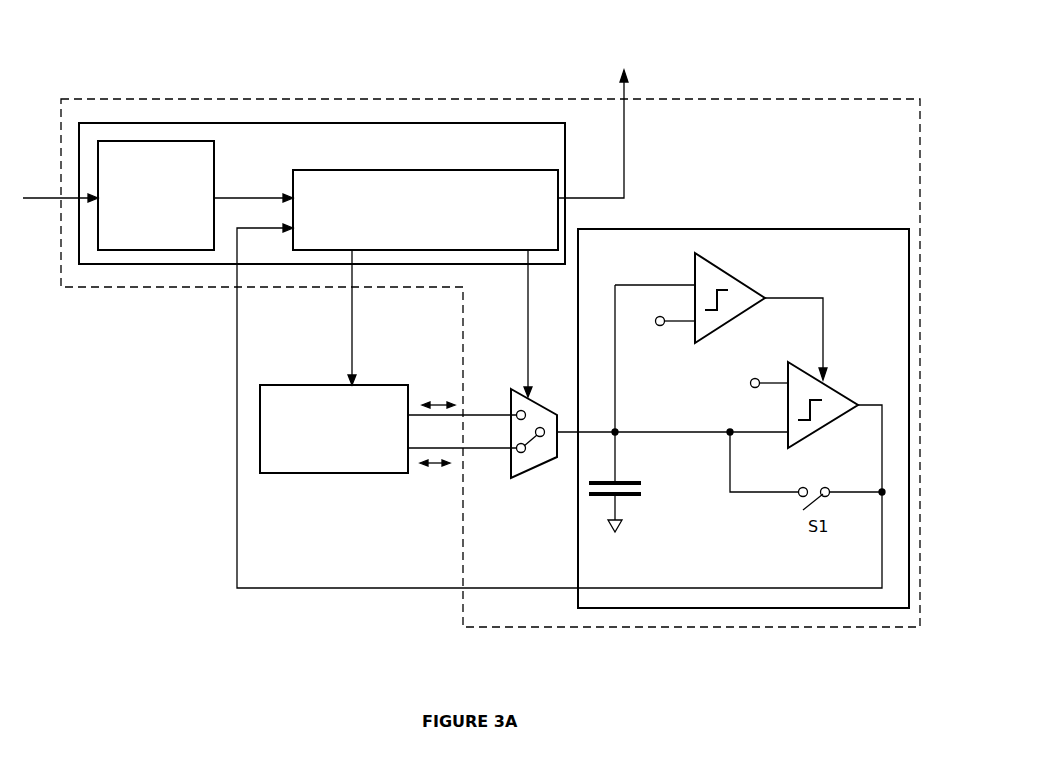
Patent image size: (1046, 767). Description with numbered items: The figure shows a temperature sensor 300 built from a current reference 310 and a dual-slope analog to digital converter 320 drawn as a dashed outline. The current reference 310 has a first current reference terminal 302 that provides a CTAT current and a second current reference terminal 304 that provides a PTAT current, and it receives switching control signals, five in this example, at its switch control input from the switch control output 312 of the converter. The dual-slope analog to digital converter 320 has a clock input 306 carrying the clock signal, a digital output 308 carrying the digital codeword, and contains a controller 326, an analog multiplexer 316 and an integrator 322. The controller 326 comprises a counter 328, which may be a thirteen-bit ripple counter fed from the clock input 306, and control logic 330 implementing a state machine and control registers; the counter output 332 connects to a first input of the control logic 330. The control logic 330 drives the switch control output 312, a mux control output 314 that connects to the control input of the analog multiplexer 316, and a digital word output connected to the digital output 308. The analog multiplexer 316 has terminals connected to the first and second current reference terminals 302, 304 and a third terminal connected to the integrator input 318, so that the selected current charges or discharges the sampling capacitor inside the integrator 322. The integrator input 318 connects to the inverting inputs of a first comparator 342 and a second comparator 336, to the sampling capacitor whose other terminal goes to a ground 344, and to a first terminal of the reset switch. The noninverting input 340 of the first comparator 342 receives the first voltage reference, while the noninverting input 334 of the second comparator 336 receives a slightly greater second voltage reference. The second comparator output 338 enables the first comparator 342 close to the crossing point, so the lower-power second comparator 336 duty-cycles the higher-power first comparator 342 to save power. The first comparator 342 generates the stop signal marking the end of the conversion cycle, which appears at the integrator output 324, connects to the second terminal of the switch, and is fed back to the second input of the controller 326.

The temperature sensor 300 is at (505, 677).
The first current reference terminal 302 is at (493, 414).
The second current reference terminal 304 is at (413, 448).
The clock input 306 is at (33, 200).
The digital output 308 is at (624, 155).
The current reference 310 is at (321, 462).
The switch control output 312 is at (352, 322).
The mux control output 314 is at (528, 325).
The analog multiplexer 316 is at (540, 468).
The integrator input 318 is at (615, 432).
The dual-slope analog to digital converter 320 is at (380, 99).
The integrator 322 is at (578, 545).
The integrator output 324 is at (882, 405).
The controller 326 is at (308, 123).
The counter 328 is at (143, 218).
The control logic 330 is at (412, 231).
The counter output 332 is at (248, 198).
The noninverting input of the second comparator 334 is at (660, 326).
The second comparator 336 is at (720, 335).
The second comparator output 338 is at (826, 322).
The noninverting input of the first comparator 340 is at (752, 388).
The first comparator 342 is at (822, 433).
The ground 344 is at (616, 534).